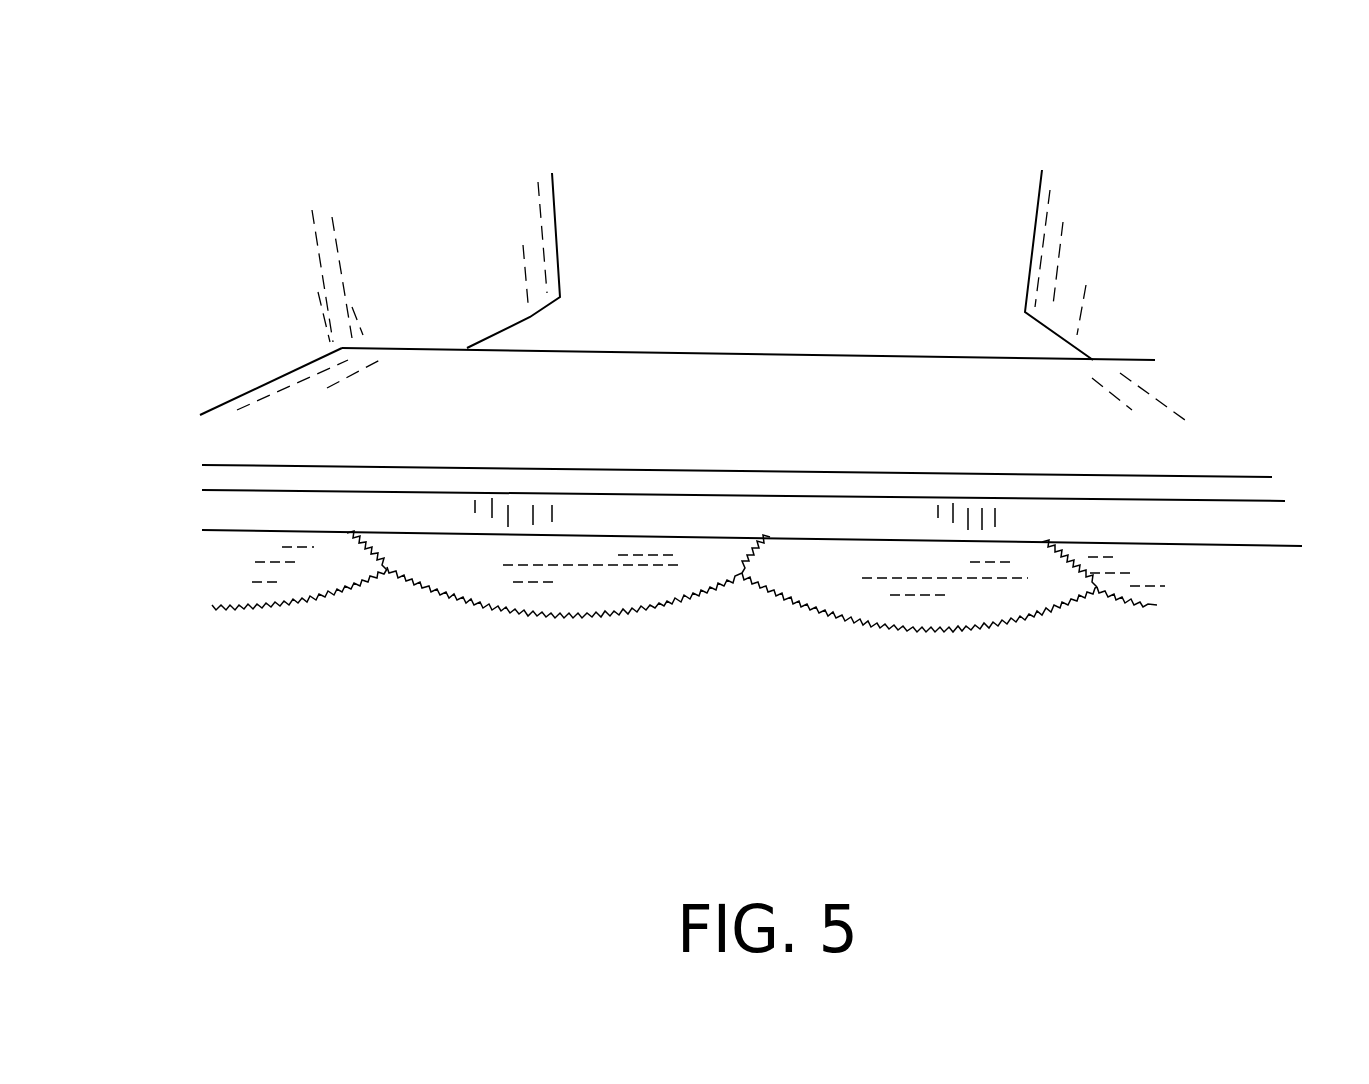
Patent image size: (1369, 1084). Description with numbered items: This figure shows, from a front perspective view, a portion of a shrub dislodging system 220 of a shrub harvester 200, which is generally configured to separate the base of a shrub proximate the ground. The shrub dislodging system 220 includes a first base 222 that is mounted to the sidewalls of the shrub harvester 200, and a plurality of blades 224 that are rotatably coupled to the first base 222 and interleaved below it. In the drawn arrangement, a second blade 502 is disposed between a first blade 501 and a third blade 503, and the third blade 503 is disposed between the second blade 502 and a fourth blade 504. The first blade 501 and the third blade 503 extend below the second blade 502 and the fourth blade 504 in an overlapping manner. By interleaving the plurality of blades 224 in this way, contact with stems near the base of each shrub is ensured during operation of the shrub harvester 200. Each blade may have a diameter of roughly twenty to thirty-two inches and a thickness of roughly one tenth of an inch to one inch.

The shrub harvester 200 is at (338, 108).
The shrub dislodging system 220 is at (294, 178).
The first base 222 is at (585, 428).
The plurality of blades 224 is at (232, 580).
The first blade 501 is at (320, 563).
The second blade 502 is at (515, 567).
The third blade 503 is at (855, 565).
The fourth blade 504 is at (1112, 573).